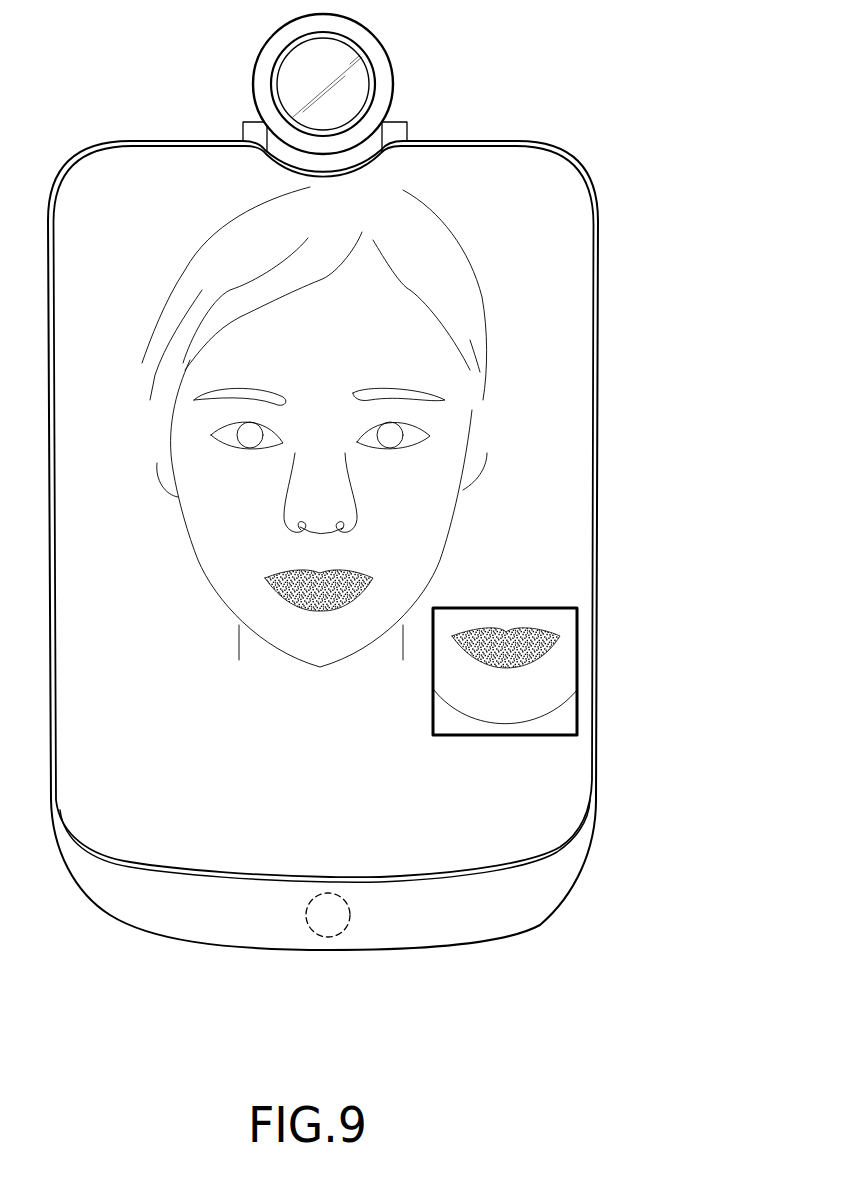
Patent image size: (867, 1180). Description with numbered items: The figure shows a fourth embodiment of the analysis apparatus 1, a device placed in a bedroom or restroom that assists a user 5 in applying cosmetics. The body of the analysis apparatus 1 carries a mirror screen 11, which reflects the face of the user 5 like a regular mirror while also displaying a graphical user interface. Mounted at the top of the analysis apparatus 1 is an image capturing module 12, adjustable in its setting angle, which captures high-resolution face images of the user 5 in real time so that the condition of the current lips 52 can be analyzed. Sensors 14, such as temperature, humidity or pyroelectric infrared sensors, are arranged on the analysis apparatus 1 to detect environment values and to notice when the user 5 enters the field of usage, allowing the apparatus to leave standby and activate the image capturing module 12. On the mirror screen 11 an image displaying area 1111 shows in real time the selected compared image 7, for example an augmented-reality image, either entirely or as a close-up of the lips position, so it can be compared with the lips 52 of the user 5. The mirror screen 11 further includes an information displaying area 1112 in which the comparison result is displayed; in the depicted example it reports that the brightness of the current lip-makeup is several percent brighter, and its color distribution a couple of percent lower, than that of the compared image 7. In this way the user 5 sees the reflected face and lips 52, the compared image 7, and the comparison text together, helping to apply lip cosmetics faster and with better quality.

The analysis apparatus 1 is at (600, 210).
The mirror screen 11 is at (560, 460).
The image capturing module 12 is at (357, 88).
The user 5 is at (477, 442).
The lips 52 is at (388, 586).
The image displaying area 1111 is at (577, 623).
The compared image 7 is at (556, 655).
The information displaying area 1112 is at (491, 855).
The sensors 14 is at (350, 915).